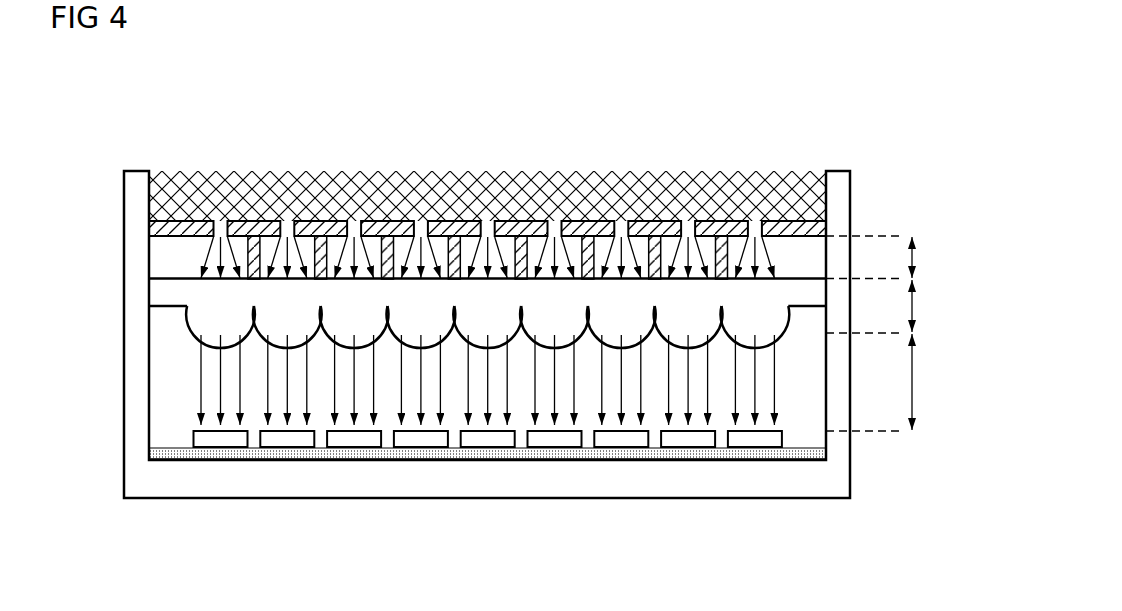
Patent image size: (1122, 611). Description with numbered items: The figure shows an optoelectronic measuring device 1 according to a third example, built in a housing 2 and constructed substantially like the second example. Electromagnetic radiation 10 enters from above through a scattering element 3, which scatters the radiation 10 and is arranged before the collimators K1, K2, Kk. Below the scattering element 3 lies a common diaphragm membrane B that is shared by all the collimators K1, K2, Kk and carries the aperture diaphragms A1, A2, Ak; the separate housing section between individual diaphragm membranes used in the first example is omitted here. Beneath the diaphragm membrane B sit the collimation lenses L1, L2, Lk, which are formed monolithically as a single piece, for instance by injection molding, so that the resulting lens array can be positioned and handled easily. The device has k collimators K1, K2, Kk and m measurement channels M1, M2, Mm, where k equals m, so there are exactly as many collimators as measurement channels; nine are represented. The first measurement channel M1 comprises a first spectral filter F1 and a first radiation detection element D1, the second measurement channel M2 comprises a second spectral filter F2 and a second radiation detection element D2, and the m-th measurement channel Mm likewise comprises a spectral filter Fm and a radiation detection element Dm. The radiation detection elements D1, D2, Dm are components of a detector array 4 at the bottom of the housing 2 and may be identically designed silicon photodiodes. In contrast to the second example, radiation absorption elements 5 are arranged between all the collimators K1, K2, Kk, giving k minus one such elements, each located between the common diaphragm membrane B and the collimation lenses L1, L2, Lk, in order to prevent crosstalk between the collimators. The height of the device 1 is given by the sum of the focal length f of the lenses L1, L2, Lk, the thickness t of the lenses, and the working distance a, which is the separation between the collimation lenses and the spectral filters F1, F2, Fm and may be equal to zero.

The optoelectronic measuring device 1 is at (864, 100).
The housing 2 is at (130, 290).
The scattering element 3 is at (181, 185).
The detector array 4 is at (826, 453).
The radiation absorption element 5 is at (253, 250).
The electromagnetic radiation 10 is at (185, 260).
The first aperture diaphragm A1 is at (214, 213).
The second aperture diaphragm A2 is at (293, 213).
The k-th aperture diaphragm Ak is at (747, 213).
The first collimator K1 is at (223, 163).
The second collimator K2 is at (285, 163).
The k-th collimator Kk is at (757, 163).
The common diaphragm membrane B is at (793, 220).
The first collimation lens L1 is at (193, 327).
The second collimation lens L2 is at (305, 322).
The k-th collimation lens Lk is at (735, 334).
The first spectral filter F1 is at (193, 433).
The second spectral filter F2 is at (313, 440).
The m-th spectral filter Fm is at (781, 440).
The first radiation detection element D1 is at (210, 476).
The second radiation detection element D2 is at (299, 476).
The m-th radiation detection element Dm is at (766, 476).
The first measurement channel M1 is at (220, 513).
The second measurement channel M2 is at (289, 513).
The m-th measurement channel Mm is at (755, 513).
The focal length f is at (912, 258).
The thickness t is at (912, 305).
The working distance a is at (912, 383).